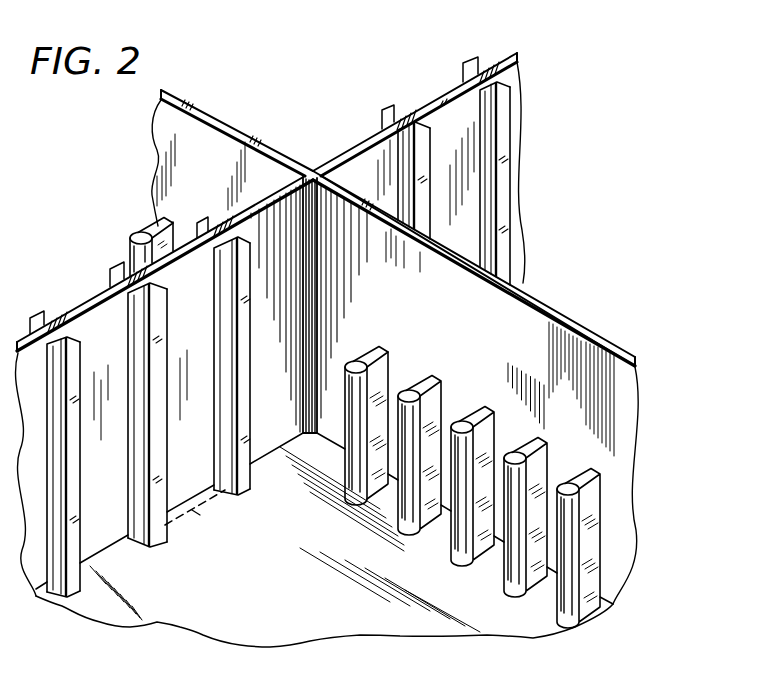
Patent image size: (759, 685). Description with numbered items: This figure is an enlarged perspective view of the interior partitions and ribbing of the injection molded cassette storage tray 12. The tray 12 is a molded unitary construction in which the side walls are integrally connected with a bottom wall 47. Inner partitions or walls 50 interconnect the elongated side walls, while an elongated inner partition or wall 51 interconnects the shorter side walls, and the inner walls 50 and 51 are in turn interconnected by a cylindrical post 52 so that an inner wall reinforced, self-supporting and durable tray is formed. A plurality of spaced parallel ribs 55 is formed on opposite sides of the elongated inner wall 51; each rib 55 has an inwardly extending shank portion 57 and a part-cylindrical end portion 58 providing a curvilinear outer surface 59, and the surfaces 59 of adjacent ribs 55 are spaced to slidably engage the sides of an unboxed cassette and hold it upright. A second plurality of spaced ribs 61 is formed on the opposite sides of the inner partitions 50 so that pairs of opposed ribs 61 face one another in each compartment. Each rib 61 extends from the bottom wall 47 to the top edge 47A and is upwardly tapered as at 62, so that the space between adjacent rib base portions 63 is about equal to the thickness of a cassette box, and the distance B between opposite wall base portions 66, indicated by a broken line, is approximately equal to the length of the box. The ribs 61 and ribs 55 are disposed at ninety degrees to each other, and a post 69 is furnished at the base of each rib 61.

The cassette storage tray 12 is at (290, 142).
The bottom wall 47 is at (356, 632).
The top edge 47A is at (273, 201).
The inner partition 50 is at (447, 98).
The elongated inner partition 51 is at (196, 133).
The cylindrical post 52 is at (314, 170).
The rib 55 is at (172, 250).
The shank portion 57 is at (157, 222).
The part-cylindrical end portion 58 is at (133, 235).
The curvilinear outer surface 59 is at (133, 258).
The rib 61 is at (392, 121).
The upward taper 62 is at (512, 97).
The rib base portion 63 is at (134, 548).
The wall base portion 66 is at (233, 470).
The post 69 is at (486, 70).
The distance between opposite wall base portions B is at (195, 512).